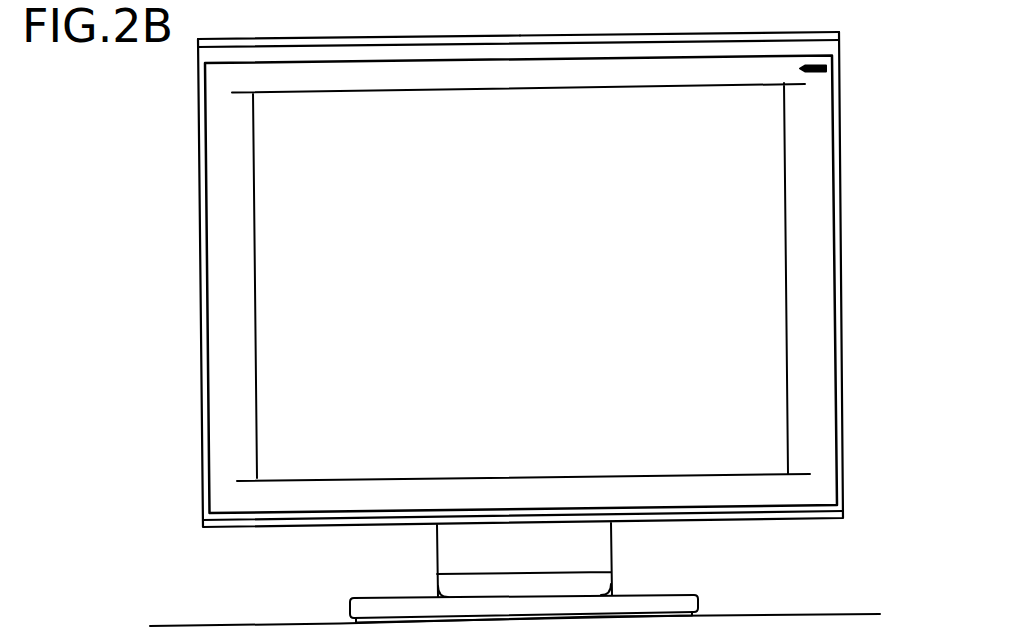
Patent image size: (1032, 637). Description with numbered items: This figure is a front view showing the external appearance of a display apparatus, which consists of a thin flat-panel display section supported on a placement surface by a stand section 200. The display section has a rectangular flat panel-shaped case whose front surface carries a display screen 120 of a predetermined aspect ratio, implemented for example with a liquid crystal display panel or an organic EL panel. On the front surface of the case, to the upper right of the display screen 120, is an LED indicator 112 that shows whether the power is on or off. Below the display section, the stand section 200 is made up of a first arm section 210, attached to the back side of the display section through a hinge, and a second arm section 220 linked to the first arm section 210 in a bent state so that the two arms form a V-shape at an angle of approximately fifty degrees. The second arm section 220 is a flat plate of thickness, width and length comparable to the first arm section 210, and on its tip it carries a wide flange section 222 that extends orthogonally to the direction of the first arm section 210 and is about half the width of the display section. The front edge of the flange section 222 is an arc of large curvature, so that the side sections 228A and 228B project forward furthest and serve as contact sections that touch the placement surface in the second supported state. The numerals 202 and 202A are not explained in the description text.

The LED indicator 112 is at (826, 68).
The display screen 120 is at (272, 136).
The stand section 200 is at (578, 557).
The base plate 202 is at (524, 624).
The base plate edge 202A is at (515, 625).
The first arm section 210 is at (452, 549).
The second arm section 220 is at (763, 548).
The flange section 222 is at (672, 604).
The side section 228A is at (798, 0).
The side section 228B is at (359, 19).